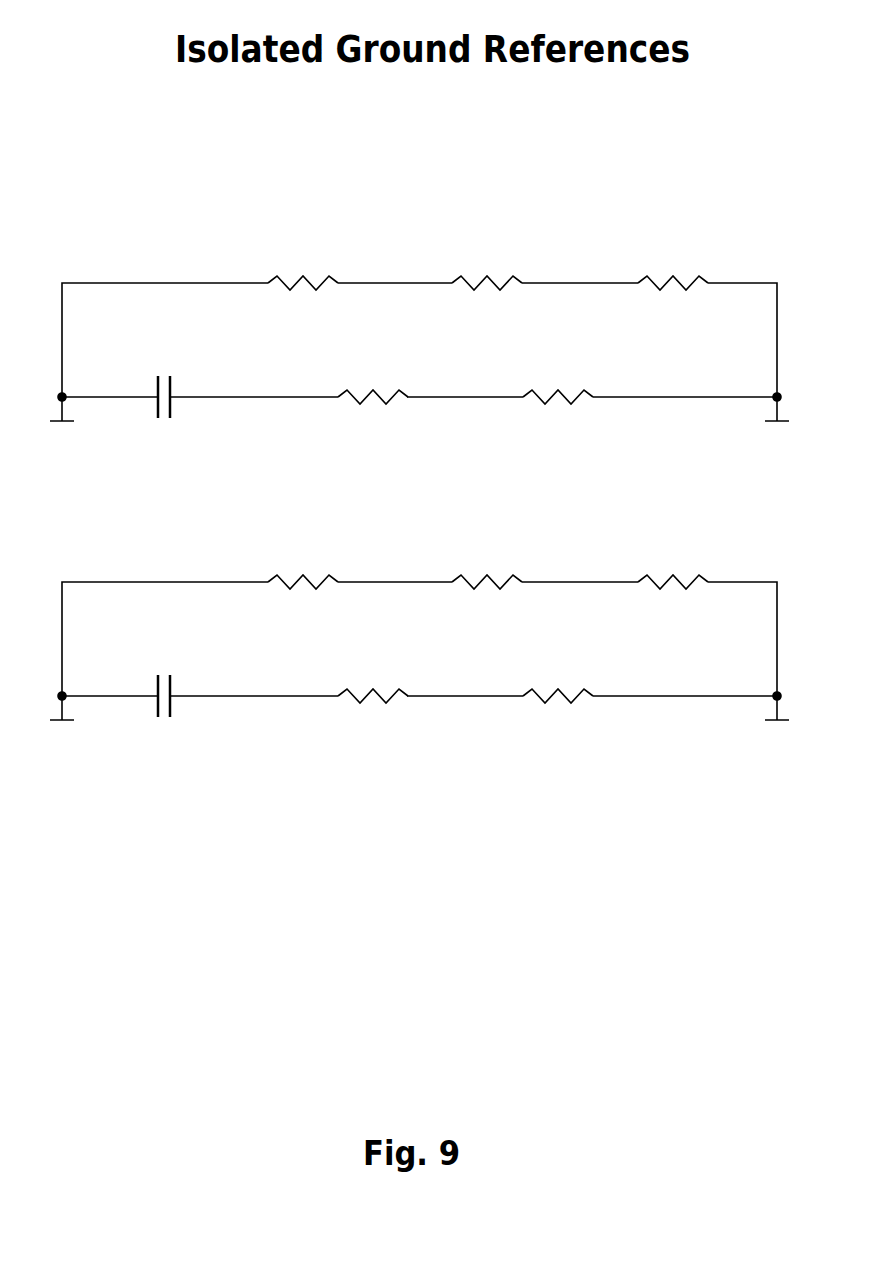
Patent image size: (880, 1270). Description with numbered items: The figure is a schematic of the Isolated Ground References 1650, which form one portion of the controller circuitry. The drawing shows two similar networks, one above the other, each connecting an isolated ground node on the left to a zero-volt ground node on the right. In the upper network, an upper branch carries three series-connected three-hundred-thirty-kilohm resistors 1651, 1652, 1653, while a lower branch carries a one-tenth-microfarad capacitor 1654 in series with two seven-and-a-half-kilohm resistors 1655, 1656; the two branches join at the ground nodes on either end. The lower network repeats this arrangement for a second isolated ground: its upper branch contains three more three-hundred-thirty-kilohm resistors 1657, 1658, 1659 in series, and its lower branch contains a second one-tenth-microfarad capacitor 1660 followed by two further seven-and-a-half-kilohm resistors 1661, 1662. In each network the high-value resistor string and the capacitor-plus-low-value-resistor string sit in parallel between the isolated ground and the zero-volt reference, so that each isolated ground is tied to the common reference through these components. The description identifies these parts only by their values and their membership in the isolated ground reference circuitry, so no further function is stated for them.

The Isolated Ground References 1650 is at (419, 410).
The 330 k resistor 1651 is at (303, 264).
The 330 k resistor 1652 is at (487, 264).
The 330 k resistor 1653 is at (673, 264).
The 0.1 µF capacitor 1654 is at (163, 375).
The 7.5 k resistor 1655 is at (373, 373).
The 7.5 k resistor 1656 is at (558, 373).
The 330 k resistor 1657 is at (303, 563).
The 330 k resistor 1658 is at (487, 563).
The 330 k resistor 1659 is at (673, 563).
The 0.1 µF capacitor 1660 is at (163, 674).
The 7.5 k resistor 1661 is at (373, 672).
The 7.5 k resistor 1662 is at (558, 672).